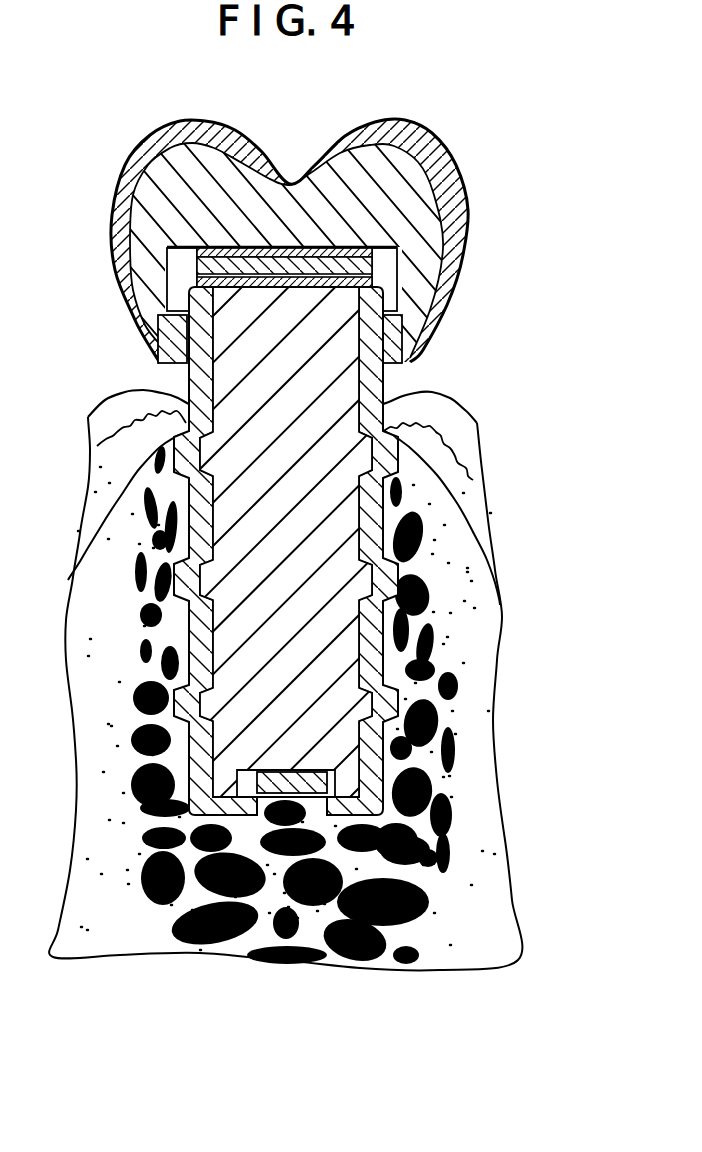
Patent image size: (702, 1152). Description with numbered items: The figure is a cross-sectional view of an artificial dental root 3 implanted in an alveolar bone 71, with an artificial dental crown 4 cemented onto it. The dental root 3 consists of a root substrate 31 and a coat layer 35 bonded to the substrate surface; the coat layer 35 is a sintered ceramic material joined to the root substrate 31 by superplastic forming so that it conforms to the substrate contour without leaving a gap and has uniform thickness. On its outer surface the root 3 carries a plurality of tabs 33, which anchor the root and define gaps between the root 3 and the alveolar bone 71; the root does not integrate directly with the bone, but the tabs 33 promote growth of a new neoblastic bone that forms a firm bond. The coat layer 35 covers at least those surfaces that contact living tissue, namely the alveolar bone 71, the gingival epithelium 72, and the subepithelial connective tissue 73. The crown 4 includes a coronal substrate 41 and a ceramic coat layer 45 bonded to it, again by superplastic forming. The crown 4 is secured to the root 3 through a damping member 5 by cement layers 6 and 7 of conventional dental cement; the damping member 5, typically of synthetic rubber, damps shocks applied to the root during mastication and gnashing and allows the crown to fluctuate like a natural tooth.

The artificial dental root 3 is at (384, 757).
The root substrate 31 is at (258, 795).
The tabs 33 is at (384, 712).
The coat layer 35 is at (243, 812).
The artificial dental crown 4 is at (472, 225).
The coronal substrate 41 is at (417, 198).
The coat layer 45 is at (433, 153).
The damping member 5 is at (380, 283).
The cement layer 6 is at (372, 256).
The cement layer 7 is at (397, 317).
The alveolar bone 71 is at (468, 593).
The gingival epithelium 72 is at (468, 447).
The subepithelial connective tissue 73 is at (473, 507).